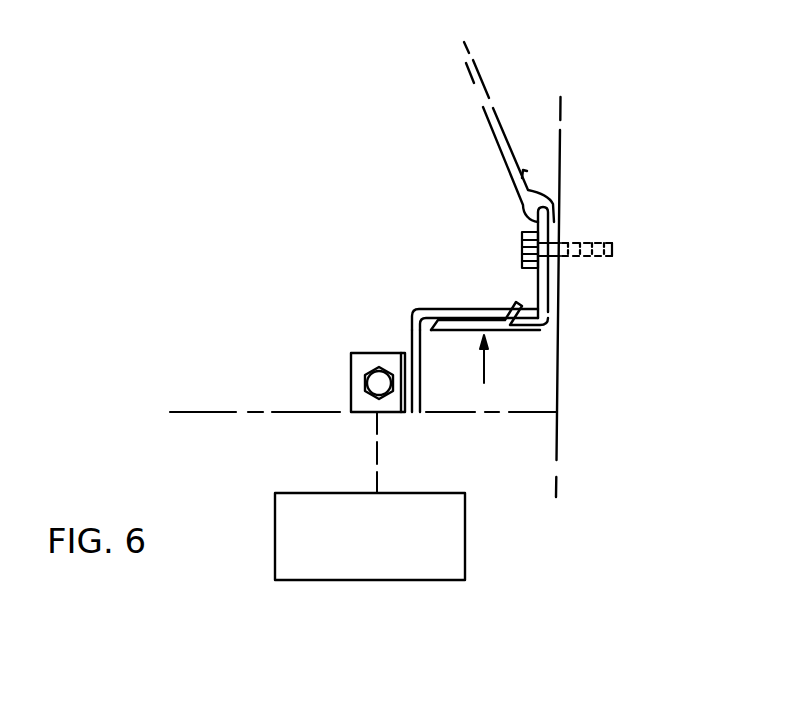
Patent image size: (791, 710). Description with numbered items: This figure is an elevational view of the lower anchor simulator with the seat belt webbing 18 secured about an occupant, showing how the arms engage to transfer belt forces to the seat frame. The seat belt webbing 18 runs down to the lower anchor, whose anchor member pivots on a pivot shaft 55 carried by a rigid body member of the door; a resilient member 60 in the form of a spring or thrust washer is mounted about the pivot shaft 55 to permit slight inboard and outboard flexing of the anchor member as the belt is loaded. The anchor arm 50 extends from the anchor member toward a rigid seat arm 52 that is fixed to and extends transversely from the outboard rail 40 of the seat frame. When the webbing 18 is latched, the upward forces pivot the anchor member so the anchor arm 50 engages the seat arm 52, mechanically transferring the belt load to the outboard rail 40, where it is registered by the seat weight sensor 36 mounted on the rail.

The seat belt webbing 18 is at (505, 128).
The seat weight sensor 36 is at (300, 582).
The outboard rail 40 is at (410, 328).
The anchor arm 50 is at (516, 334).
The seat arm 52 is at (460, 308).
The pivot shaft 55 is at (563, 245).
The resilient member 60 is at (556, 283).